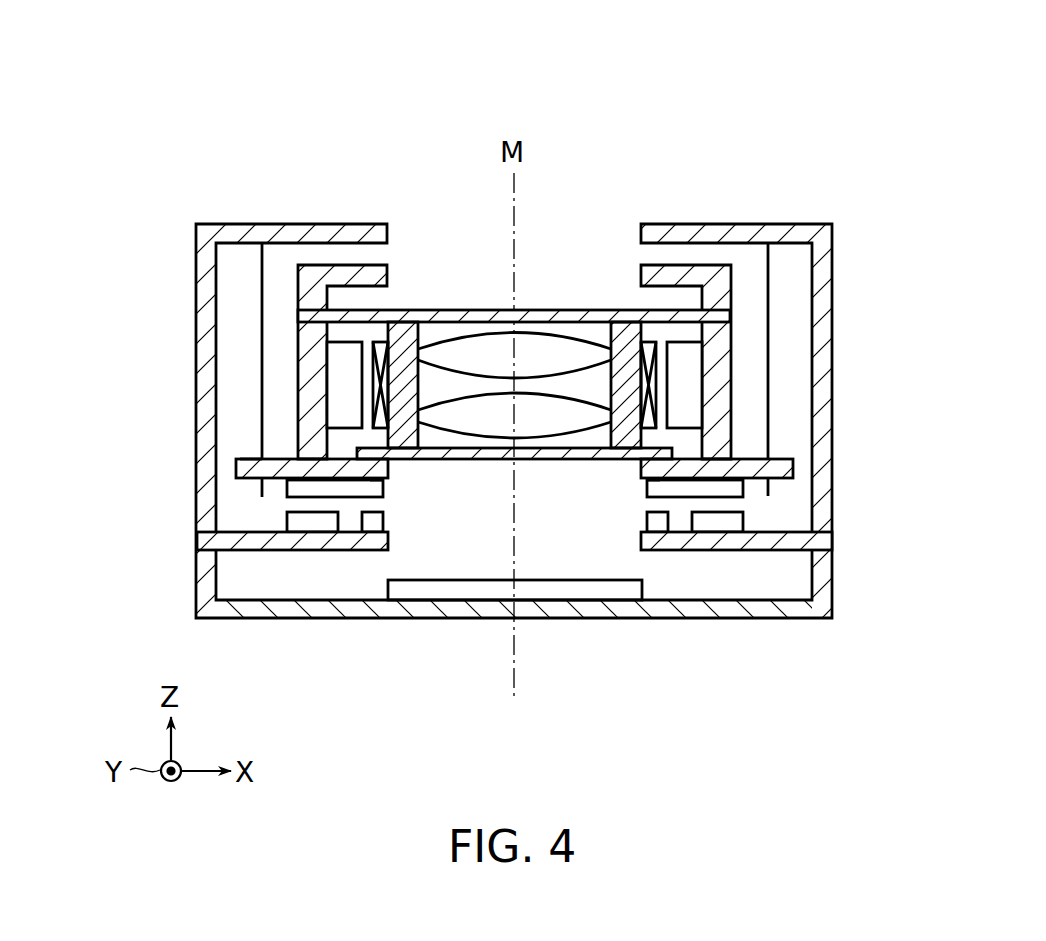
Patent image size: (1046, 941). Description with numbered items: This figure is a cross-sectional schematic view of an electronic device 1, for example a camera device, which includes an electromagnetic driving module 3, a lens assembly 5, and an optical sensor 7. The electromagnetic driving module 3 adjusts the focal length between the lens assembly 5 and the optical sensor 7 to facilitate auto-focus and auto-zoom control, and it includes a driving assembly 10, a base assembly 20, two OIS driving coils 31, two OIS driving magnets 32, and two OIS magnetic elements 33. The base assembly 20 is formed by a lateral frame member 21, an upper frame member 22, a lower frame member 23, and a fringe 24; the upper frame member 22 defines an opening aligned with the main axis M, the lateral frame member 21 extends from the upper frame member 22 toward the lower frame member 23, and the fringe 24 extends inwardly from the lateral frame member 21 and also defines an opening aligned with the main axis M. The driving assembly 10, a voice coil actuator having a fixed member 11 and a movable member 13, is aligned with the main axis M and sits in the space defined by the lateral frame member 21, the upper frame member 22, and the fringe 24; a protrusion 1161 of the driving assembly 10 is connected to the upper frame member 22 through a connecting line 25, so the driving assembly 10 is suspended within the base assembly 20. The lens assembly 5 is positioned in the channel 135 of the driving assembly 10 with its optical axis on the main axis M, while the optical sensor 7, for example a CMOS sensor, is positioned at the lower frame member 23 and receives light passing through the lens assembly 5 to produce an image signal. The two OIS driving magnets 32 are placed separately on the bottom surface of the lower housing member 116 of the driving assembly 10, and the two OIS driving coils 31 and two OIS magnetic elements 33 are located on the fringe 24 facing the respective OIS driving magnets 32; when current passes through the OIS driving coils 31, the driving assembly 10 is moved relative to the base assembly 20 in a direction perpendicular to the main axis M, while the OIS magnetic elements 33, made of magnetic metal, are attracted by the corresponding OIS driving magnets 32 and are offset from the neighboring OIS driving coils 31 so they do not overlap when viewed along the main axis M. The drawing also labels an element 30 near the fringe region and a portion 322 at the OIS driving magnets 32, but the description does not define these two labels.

The electronic device 1 is at (150, 113).
The electromagnetic driving module 3 is at (158, 220).
The lens assembly 5 is at (567, 333).
The optical sensor 7 is at (541, 590).
The driving assembly 10 is at (282, 250).
The fixed member 11 is at (315, 256).
The movable member 13 is at (403, 320).
The base assembly 20 is at (216, 210).
The lateral frame member 21 is at (204, 367).
The upper frame member 22 is at (345, 230).
The lower frame member 23 is at (828, 590).
The fringe 24 is at (228, 540).
The connecting line 25 is at (258, 285).
The driving unit 30 is at (236, 510).
The OIS driving coil 31 is at (305, 520).
The OIS driving magnet 32 is at (287, 490).
The OIS magnetic element 33 is at (372, 520).
The lower housing member 116 is at (232, 467).
The channel 135 is at (450, 333).
The coil end portion 322 is at (377, 490).
The protrusion 1161 is at (253, 458).